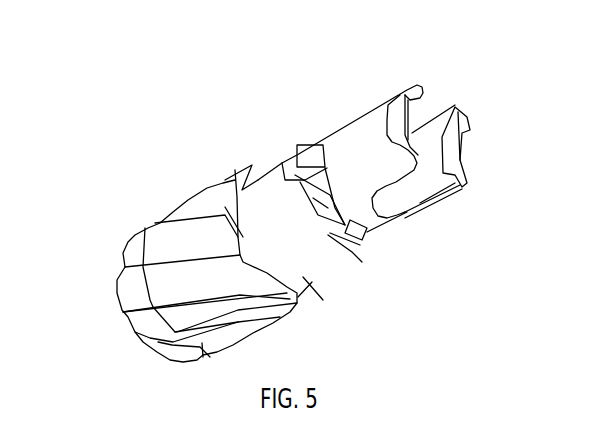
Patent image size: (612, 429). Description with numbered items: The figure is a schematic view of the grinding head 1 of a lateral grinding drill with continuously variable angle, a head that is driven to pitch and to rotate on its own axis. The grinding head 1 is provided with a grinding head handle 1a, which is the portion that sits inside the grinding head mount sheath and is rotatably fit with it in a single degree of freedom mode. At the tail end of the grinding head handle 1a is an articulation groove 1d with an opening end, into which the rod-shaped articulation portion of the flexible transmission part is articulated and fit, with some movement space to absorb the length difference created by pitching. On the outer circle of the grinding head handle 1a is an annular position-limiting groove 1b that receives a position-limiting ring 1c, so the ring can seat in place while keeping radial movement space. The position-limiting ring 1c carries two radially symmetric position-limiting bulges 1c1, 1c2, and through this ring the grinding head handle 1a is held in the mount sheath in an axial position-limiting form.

The grinding head 1 is at (158, 240).
The grinding head handle 1a is at (355, 143).
The annular position-limiting groove 1b is at (340, 233).
The position-limiting ring 1c is at (318, 200).
The position-limiting bulge 1c1 is at (292, 155).
The position-limiting bulge 1c2 is at (397, 230).
The articulation groove 1d is at (425, 183).